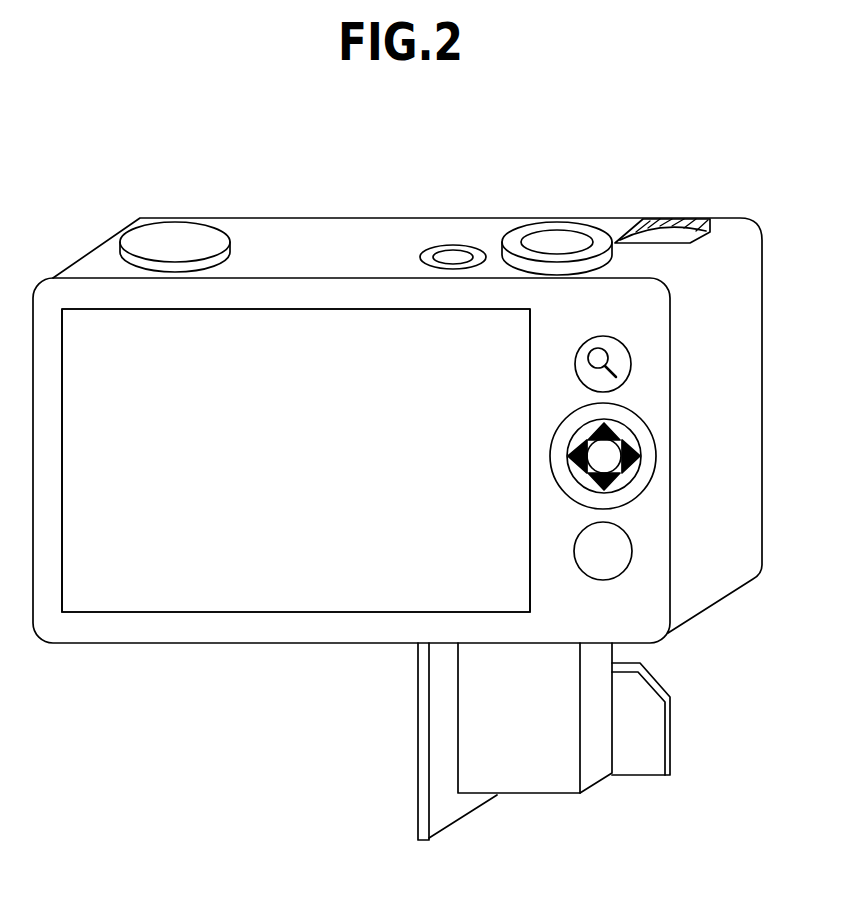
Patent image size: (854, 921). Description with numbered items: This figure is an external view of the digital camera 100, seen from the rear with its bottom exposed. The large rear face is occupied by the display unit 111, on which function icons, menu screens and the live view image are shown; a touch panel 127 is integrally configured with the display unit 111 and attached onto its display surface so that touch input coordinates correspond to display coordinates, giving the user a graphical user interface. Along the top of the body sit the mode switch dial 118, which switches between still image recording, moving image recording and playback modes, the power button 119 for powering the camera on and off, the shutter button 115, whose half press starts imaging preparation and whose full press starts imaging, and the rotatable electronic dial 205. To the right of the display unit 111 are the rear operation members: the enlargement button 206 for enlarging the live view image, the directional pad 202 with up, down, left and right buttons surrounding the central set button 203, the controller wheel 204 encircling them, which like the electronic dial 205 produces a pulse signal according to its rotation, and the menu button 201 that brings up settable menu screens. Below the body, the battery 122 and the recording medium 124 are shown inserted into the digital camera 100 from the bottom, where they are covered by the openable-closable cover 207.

The digital camera 100 is at (140, 645).
The display unit 111 is at (270, 613).
The touch panel 127 is at (296, 460).
The mode switch dial 118 is at (176, 236).
The power button 119 is at (458, 245).
The shutter button 115 is at (557, 235).
The electronic dial 205 is at (703, 240).
The enlargement button 206 is at (631, 363).
The directional pad 202 is at (612, 430).
The set button 203 is at (608, 463).
The controller wheel 204 is at (628, 493).
The menu button 201 is at (632, 551).
The openable-closable cover 207 is at (446, 812).
The battery 122 is at (530, 795).
The recording medium 124 is at (638, 778).